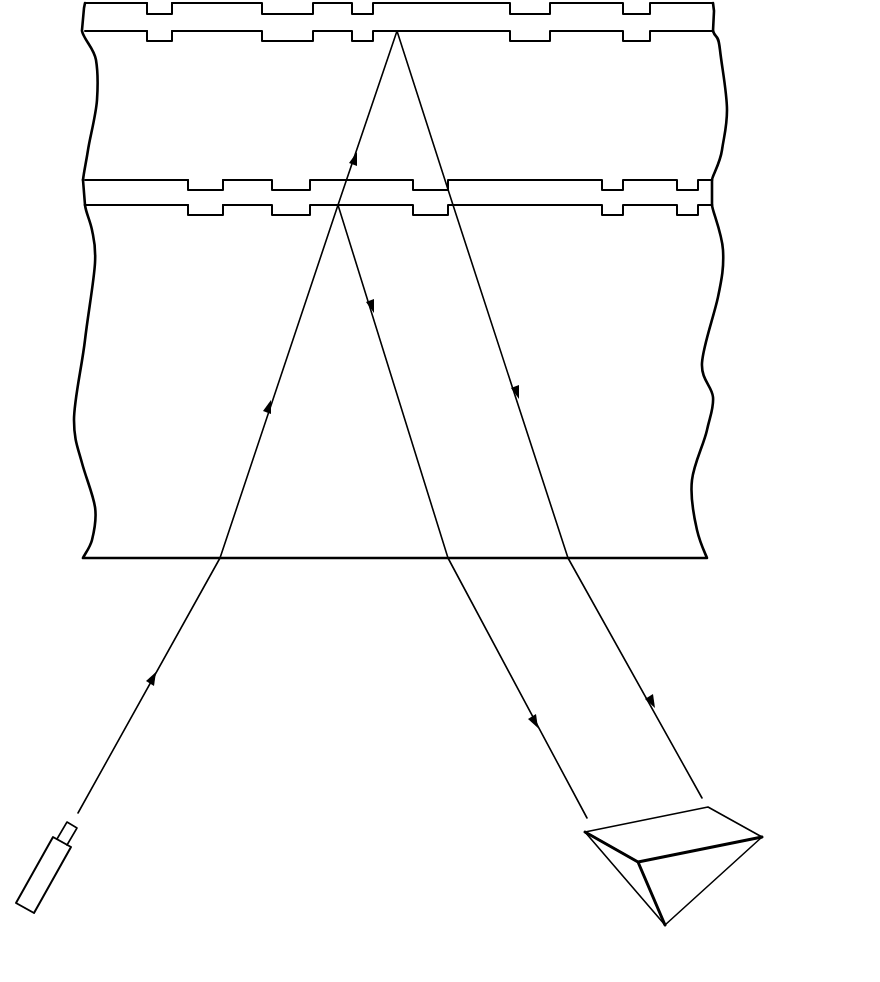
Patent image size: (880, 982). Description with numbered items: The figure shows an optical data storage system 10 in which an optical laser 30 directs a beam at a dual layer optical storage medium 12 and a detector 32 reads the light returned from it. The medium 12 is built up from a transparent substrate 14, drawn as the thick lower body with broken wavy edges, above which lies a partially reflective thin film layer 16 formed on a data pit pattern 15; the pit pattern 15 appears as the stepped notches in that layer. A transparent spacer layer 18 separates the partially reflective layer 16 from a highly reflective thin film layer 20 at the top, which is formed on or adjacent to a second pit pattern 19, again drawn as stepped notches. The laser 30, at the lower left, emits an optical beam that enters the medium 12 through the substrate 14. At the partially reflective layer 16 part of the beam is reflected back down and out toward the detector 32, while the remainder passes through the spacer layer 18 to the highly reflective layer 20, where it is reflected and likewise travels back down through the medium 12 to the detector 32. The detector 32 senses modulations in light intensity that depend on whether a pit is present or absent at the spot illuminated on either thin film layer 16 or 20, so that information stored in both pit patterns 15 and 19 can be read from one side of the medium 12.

The optical data storage system 10 is at (333, 607).
The optical storage medium 12 is at (90, 339).
The transparent substrate 14 is at (668, 431).
The data pit pattern 15 is at (132, 205).
The partially reflective thin film layer 16 is at (700, 195).
The transparent spacer layer 18 is at (692, 118).
The second pit pattern 19 is at (122, 31).
The highly reflective thin film layer 20 is at (687, 14).
The optical laser 30 is at (45, 875).
The detector 32 is at (713, 827).